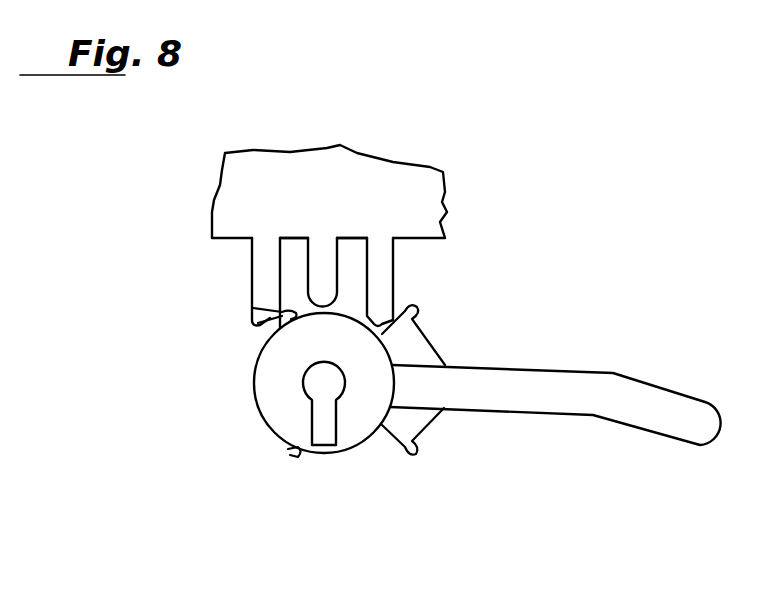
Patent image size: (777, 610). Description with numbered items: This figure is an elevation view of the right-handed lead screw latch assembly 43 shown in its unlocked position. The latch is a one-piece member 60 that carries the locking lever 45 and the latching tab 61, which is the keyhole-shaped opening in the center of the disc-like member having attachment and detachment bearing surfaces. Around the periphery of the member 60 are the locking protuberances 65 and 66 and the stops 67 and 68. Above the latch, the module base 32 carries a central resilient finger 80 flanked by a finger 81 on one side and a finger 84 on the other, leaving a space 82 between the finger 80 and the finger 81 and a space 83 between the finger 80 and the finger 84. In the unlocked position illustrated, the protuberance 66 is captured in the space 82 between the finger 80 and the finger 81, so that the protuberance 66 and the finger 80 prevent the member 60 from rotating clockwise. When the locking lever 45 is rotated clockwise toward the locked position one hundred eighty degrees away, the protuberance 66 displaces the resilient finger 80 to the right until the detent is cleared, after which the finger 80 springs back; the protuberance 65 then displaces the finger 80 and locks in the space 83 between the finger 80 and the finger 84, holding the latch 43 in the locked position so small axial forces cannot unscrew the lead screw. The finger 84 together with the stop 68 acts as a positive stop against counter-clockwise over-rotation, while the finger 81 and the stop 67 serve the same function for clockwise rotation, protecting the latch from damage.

The module base 32 is at (447, 204).
The finger 80 is at (322, 255).
The finger 81 is at (253, 326).
The space 82 is at (289, 255).
The space 83 is at (352, 258).
The finger 84 is at (389, 269).
The one-piece member 60 is at (246, 400).
The latching tab 61 is at (323, 433).
The locking protuberance 65 is at (290, 456).
The locking protuberance 66 is at (251, 307).
The stop 67 is at (406, 458).
The stop 68 is at (419, 310).
The locking handle 45 is at (612, 378).
The latch assembly 43 is at (580, 496).